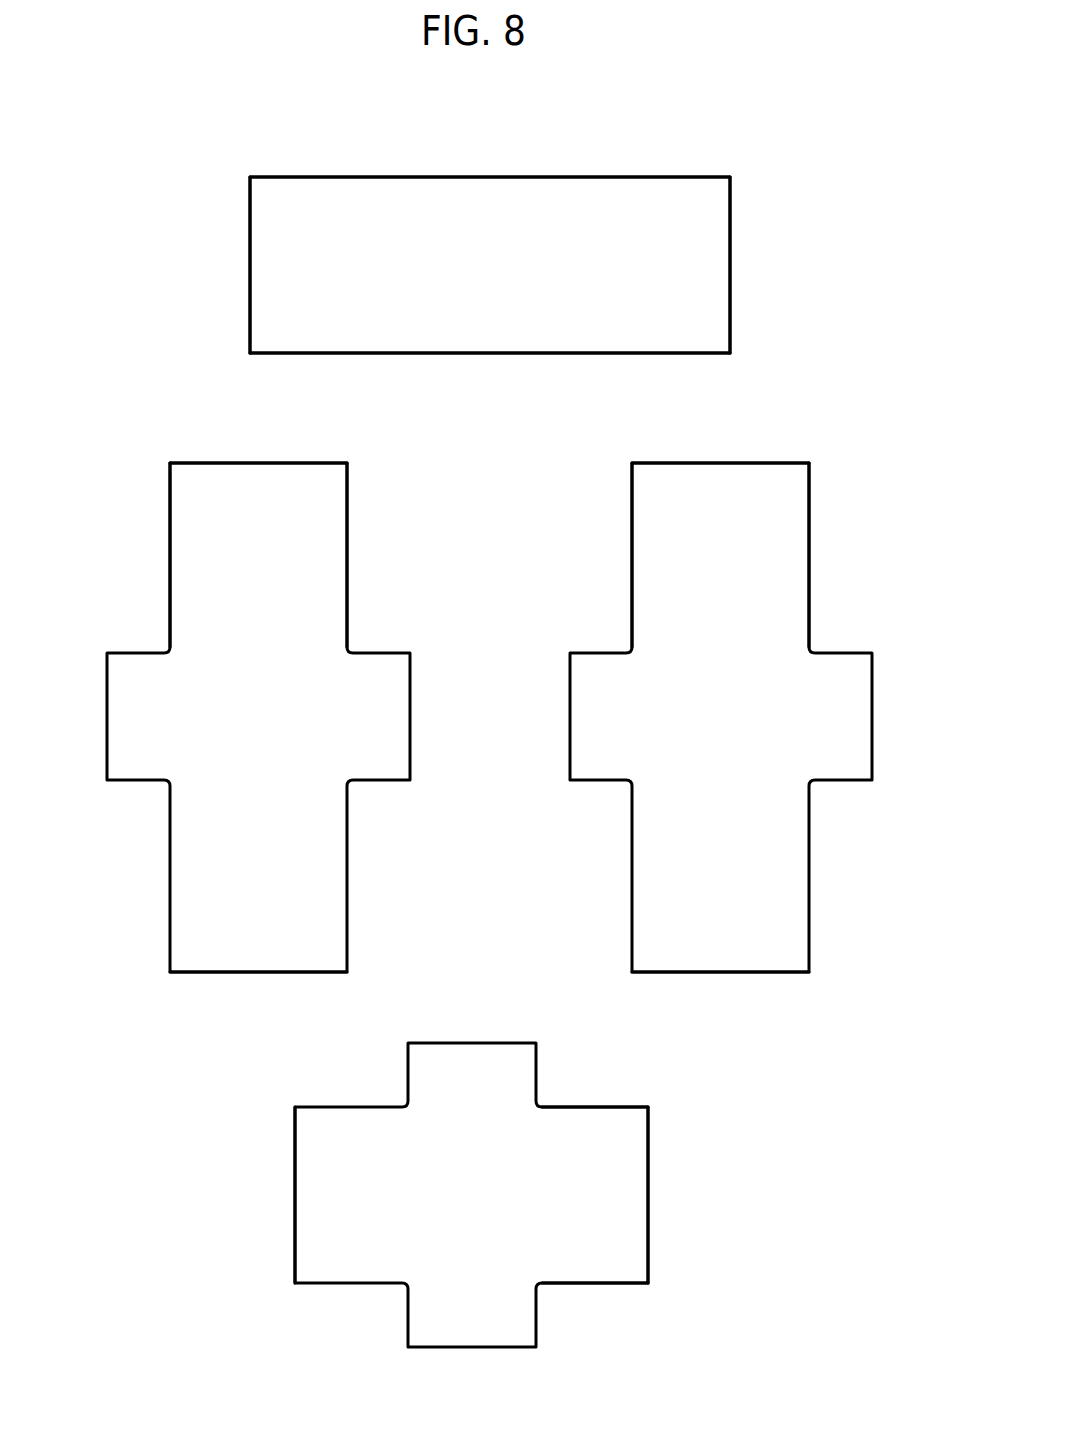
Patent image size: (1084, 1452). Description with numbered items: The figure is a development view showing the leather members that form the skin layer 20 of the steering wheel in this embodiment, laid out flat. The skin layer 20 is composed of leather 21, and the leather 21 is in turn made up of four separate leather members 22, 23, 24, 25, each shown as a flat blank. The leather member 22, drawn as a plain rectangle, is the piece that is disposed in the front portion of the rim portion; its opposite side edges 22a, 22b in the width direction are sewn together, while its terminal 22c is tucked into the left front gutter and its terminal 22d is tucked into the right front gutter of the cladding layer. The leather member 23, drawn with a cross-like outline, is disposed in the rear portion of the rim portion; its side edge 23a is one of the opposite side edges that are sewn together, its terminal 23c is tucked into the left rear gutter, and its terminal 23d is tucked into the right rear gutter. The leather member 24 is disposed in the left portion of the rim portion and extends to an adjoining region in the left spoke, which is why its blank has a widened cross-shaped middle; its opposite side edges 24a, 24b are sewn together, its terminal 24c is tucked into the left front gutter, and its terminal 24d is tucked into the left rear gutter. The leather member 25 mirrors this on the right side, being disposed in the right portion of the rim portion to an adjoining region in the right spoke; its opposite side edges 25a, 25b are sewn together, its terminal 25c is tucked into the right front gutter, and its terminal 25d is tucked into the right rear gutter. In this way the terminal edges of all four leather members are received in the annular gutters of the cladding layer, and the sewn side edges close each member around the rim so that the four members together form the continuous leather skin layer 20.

The skin layer 20 is at (212, 1193).
The leather 21 is at (502, 746).
The leather member 22 is at (212, 243).
The side edge 22a is at (477, 177).
The side edge 22b is at (471, 353).
The terminal 22c is at (250, 222).
The terminal 22d is at (732, 273).
The leather member 23 is at (673, 1183).
The side edge 23a is at (582, 1283).
The terminal 23c is at (295, 1228).
The terminal 23d is at (572, 1107).
The leather member 24 is at (148, 475).
The side edge 24a is at (170, 587).
The side edge 24b is at (348, 562).
The terminal 24c is at (265, 462).
The terminal 24d is at (272, 972).
The leather member 25 is at (833, 475).
The side edge 25a is at (810, 587).
The side edge 25b is at (630, 563).
The terminal 25c is at (712, 463).
The terminal 25d is at (712, 972).